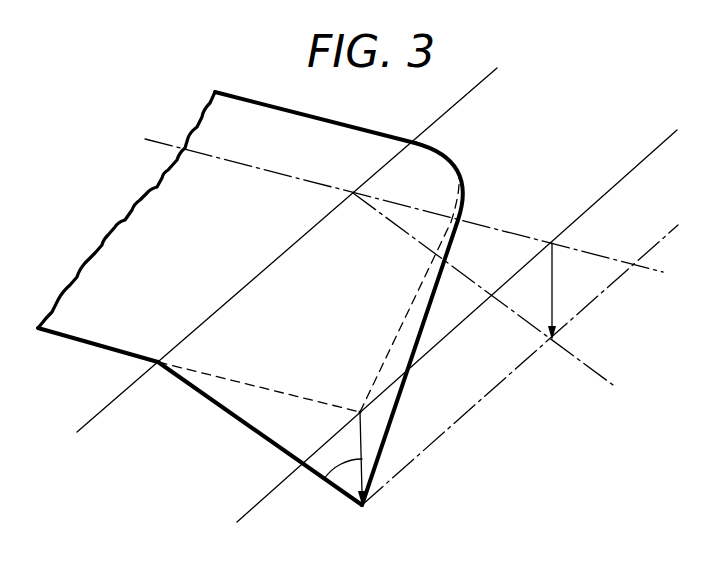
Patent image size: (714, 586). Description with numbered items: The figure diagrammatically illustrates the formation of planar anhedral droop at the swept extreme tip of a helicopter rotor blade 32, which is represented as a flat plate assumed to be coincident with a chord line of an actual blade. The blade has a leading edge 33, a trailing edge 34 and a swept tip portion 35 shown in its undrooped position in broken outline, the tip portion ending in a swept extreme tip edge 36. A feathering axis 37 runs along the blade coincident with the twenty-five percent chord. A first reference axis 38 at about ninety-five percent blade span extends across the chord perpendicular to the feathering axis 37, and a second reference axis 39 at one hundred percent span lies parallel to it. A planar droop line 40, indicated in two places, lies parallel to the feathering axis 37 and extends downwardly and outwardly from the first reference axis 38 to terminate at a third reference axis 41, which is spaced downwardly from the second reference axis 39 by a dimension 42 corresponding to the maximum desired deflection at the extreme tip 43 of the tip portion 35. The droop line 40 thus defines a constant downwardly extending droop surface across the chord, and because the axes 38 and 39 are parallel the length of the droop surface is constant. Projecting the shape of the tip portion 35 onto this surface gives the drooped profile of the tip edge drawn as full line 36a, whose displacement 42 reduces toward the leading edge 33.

The rotor blade 32 is at (215, 234).
The leading edge 33 is at (353, 123).
The trailing edge 34 is at (103, 348).
The swept tip portion 35 is at (353, 293).
The swept extreme tip edge 36 is at (395, 340).
The drooped tip edge profile 36a is at (408, 383).
The feathering axis 37 is at (645, 263).
The first reference axis 38 is at (487, 78).
The second reference axis 39 is at (655, 153).
The planar droop line 40 is at (242, 428).
The third reference axis 41 is at (417, 458).
The deflection dimension 42 is at (564, 273).
The extreme tip 43 is at (360, 412).